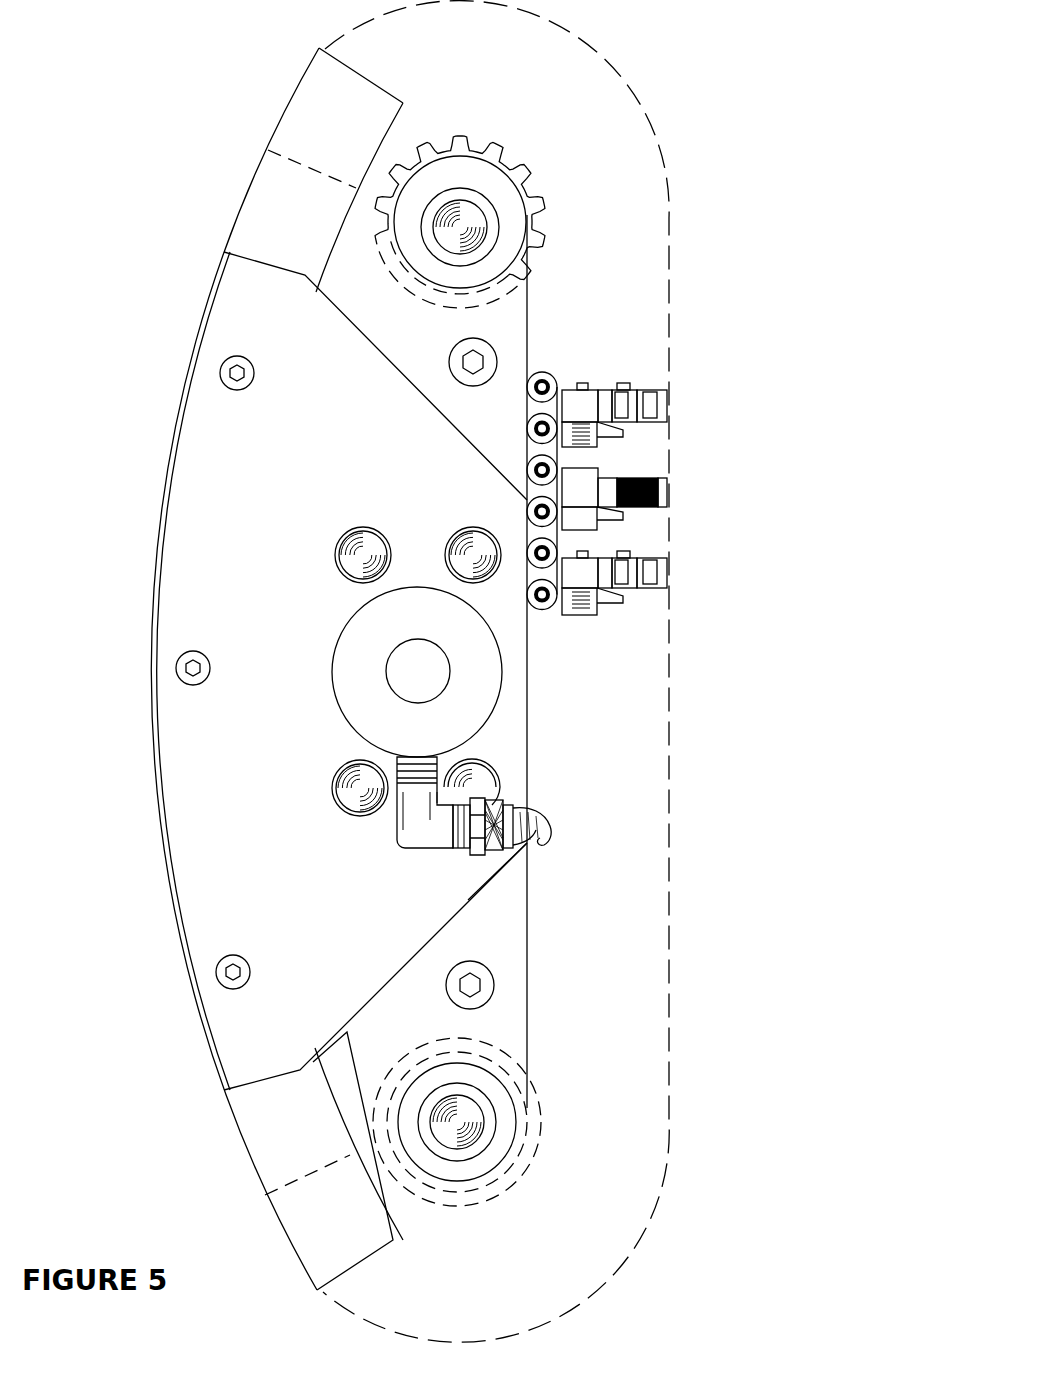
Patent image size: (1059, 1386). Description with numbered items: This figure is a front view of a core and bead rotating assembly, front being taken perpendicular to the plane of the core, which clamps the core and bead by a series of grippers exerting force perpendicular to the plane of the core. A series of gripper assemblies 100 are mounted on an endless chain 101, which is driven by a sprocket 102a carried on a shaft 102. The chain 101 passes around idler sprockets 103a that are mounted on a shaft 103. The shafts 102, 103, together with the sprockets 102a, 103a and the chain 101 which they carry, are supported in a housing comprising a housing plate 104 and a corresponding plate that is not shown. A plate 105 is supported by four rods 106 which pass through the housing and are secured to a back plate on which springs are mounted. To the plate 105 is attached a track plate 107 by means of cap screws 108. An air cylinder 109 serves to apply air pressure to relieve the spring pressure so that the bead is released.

The gripper assemblies 100 is at (672, 425).
The endless chain 101 is at (568, 370).
The shaft 102 is at (428, 1122).
The sprocket 102a is at (540, 1122).
The shaft 103 is at (433, 226).
The idler sprockets 103a is at (545, 218).
The housing plate 104 is at (532, 943).
The plate 105 is at (202, 466).
The rods 106 is at (332, 555).
The track plate 107 is at (277, 118).
The cap screws 108 is at (216, 373).
The air cylinder 109 is at (333, 697).